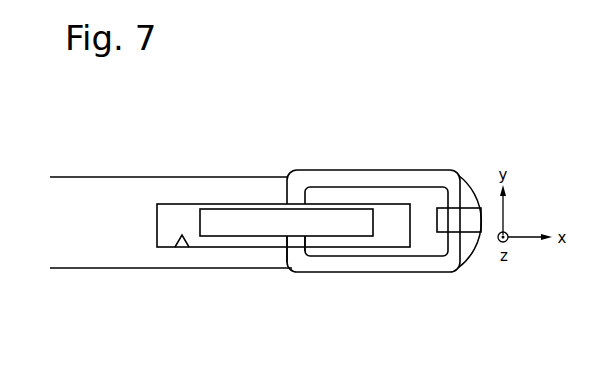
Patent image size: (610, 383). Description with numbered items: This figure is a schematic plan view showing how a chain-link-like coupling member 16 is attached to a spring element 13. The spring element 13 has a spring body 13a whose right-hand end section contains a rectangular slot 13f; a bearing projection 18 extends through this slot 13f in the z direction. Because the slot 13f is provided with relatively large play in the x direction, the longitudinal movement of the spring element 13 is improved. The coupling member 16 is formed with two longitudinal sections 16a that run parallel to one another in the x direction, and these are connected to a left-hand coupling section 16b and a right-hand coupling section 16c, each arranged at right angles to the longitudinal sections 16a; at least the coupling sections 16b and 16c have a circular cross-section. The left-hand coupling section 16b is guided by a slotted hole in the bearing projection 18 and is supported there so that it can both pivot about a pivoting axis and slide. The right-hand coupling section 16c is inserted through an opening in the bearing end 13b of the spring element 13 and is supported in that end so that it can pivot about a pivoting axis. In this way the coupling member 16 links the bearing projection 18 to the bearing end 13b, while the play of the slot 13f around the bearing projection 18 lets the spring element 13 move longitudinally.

The spring element 13 is at (133, 169).
The spring body 13a is at (213, 192).
The bearing end 13b is at (470, 214).
The rectangular slot 13f is at (180, 244).
The coupling member 16 is at (369, 205).
The longitudinal sections 16a is at (335, 180).
The left-hand coupling section 16b is at (297, 240).
The right-hand coupling section 16c is at (457, 236).
The bearing projection 18 is at (252, 223).